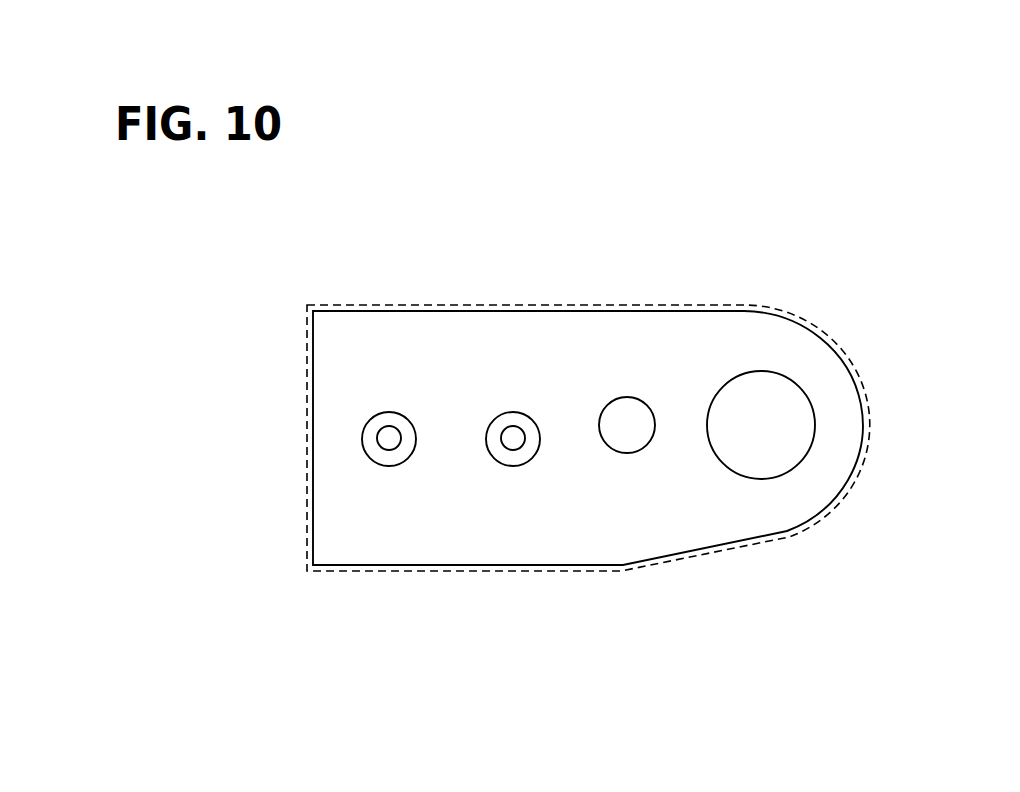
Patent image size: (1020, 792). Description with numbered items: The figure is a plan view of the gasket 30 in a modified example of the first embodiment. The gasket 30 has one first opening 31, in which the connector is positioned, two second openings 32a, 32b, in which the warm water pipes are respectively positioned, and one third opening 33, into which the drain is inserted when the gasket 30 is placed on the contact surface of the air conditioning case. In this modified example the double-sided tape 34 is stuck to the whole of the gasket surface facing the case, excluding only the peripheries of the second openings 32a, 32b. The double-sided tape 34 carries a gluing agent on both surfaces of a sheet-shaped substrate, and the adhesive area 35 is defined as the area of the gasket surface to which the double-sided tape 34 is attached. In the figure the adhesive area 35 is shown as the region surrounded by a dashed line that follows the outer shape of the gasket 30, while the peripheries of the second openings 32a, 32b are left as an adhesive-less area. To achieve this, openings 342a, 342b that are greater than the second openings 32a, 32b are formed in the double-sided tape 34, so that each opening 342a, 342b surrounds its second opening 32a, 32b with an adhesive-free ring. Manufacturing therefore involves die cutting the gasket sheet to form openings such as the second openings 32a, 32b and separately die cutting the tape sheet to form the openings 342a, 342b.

The gasket 30 is at (558, 412).
The first opening 31 is at (800, 455).
The second opening 32a is at (518, 447).
The second opening 32b is at (394, 447).
The third opening 33 is at (648, 440).
The double-sided tape 34 is at (697, 343).
The adhesive area 35 is at (615, 305).
The opening 342a is at (533, 412).
The opening 342b is at (405, 412).